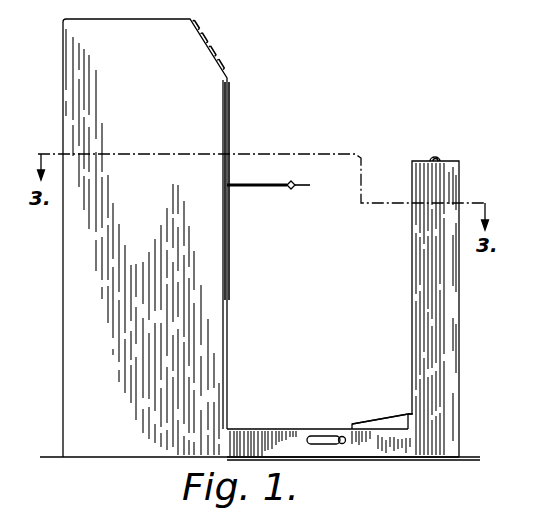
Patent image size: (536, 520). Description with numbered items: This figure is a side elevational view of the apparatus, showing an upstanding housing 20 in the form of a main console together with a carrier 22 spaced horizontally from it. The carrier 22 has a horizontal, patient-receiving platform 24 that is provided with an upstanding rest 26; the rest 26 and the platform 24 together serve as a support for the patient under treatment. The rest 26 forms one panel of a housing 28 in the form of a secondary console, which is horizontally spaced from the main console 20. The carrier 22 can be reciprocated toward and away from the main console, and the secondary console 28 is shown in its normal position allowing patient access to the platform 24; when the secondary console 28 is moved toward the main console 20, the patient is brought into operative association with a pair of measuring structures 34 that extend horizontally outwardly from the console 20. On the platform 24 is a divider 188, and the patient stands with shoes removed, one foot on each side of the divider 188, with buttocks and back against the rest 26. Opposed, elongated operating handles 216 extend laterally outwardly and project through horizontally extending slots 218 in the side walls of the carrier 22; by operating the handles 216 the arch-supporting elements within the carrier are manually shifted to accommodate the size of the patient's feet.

The housing 20 is at (58, 57).
The carrier 22 is at (251, 425).
The platform 24 is at (378, 428).
The divider 188 is at (395, 418).
The rest 26 is at (412, 252).
The housing 28 is at (464, 168).
The measuring structures 34 is at (262, 188).
The operating handles 216 is at (345, 440).
The slots 218 is at (330, 444).